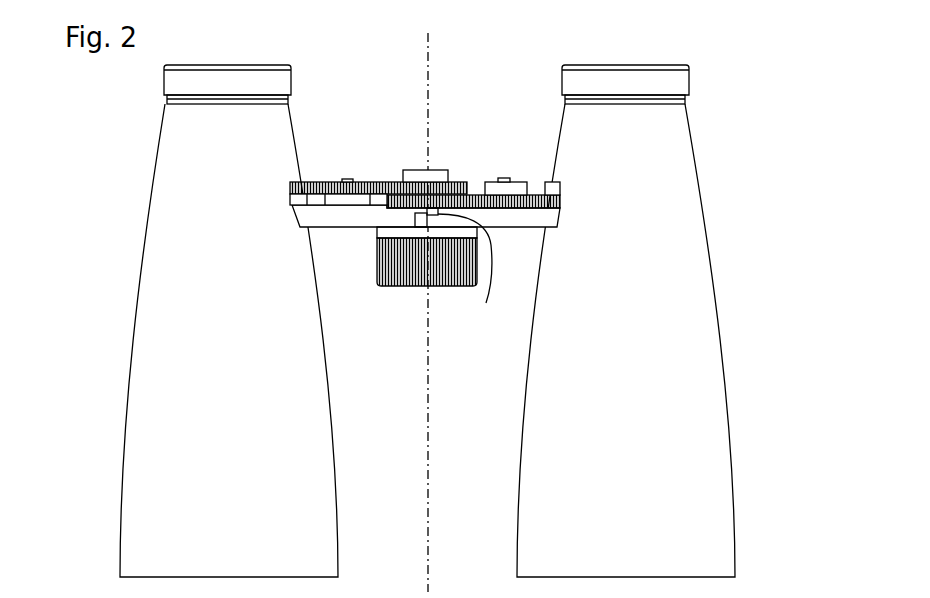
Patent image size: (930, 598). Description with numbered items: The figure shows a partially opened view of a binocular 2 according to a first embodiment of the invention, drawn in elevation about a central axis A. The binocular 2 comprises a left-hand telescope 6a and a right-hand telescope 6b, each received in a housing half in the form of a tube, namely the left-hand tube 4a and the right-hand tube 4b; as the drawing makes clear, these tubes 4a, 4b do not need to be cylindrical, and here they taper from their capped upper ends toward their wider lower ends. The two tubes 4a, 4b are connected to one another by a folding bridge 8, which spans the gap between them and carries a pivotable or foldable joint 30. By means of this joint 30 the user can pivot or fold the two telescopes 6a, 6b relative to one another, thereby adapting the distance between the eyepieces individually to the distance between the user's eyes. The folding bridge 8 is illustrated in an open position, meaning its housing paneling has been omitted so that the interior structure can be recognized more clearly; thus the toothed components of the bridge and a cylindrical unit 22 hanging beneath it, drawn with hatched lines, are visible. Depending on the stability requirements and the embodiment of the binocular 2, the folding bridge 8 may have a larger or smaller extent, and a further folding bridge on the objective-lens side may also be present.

The binocular 2 is at (421, 295).
The left-hand tube 4a is at (137, 270).
The right-hand tube 4b is at (716, 258).
The left-hand telescope 6a is at (133, 312).
The right-hand telescope 6b is at (720, 315).
The folding bridge 8 is at (472, 153).
The motor 22 is at (390, 287).
The pivotable joint 30 is at (468, 272).
The axis A is at (428, 43).